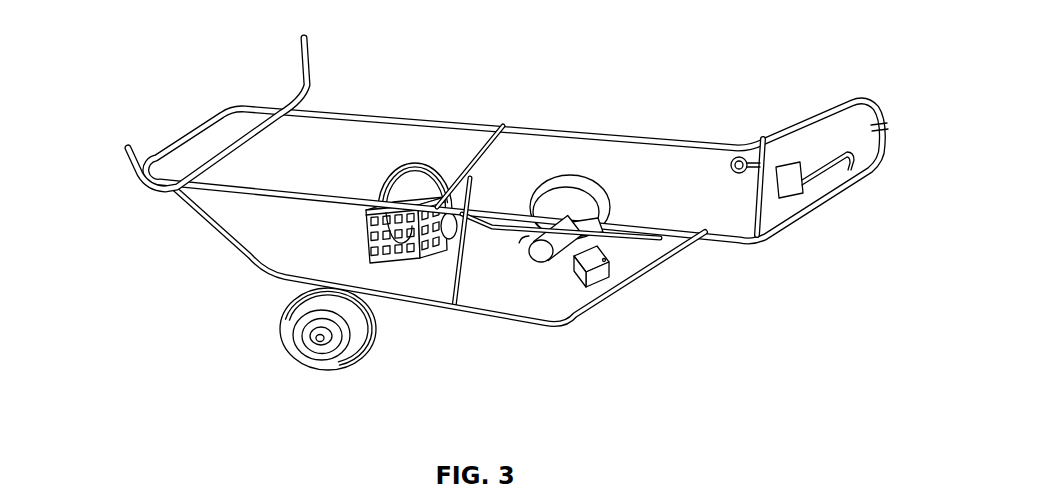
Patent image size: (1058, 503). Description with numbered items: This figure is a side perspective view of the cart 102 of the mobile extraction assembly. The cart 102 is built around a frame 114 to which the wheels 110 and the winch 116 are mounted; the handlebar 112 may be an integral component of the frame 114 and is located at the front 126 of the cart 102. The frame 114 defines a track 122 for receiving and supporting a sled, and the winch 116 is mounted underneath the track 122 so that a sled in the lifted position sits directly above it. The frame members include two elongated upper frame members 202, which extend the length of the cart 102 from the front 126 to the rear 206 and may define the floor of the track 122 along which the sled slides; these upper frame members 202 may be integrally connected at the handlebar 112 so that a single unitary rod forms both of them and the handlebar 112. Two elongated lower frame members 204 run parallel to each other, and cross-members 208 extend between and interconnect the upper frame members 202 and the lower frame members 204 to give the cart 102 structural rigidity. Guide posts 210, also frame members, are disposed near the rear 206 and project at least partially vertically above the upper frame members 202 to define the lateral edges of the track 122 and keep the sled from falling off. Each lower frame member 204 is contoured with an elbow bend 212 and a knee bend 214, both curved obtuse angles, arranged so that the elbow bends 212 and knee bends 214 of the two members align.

The cart 102 is at (556, 96).
The wheels 110 is at (424, 163).
The handlebar 112 is at (882, 147).
The frame 114 is at (237, 248).
The winch 116 is at (514, 236).
The track 122 is at (487, 149).
The front 126 is at (892, 121).
The elongated upper frame members 202 is at (263, 183).
The elongated lower frame members 204 is at (447, 308).
The rear 206 is at (218, 133).
The cross-members 208 is at (498, 136).
The guide posts 210 is at (139, 172).
The elbow bend 212 is at (560, 328).
The knee bend 214 is at (268, 271).